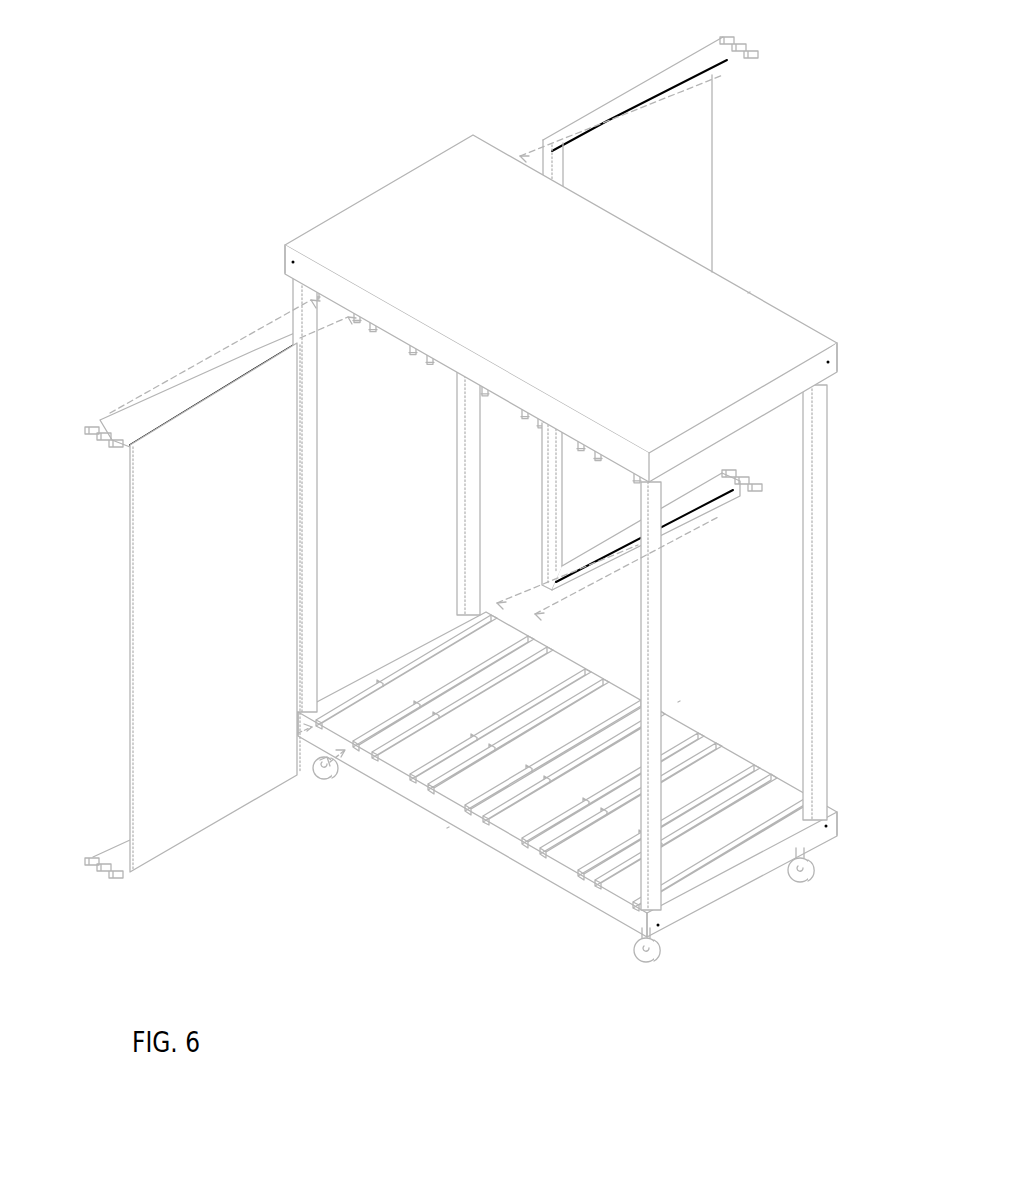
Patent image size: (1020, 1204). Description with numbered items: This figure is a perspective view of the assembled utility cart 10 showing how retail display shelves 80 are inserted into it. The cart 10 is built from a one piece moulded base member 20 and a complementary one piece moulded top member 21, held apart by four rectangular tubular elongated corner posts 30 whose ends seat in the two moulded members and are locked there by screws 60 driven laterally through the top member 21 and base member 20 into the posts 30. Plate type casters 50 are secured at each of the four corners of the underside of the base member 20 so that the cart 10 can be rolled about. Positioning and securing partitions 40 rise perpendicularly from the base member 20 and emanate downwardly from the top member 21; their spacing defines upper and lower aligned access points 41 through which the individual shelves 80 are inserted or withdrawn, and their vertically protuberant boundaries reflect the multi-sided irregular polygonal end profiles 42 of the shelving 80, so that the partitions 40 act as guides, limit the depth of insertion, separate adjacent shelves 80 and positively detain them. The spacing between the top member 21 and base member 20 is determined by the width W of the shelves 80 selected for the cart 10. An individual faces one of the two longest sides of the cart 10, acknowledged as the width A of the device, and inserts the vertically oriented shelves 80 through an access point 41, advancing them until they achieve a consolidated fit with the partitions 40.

The utility cart 10 is at (467, 500).
The base member 20 is at (538, 868).
The top member 21 is at (795, 320).
The corner posts 30 is at (310, 455).
The positioning and securing partitions 40 is at (430, 361).
The access points 41 is at (333, 299).
The shelf end profiles 42 is at (668, 78).
The casters 50 is at (330, 782).
The screws 60 is at (291, 262).
The retail display shelves 80 is at (419, 473).
The width of the display shelves W is at (712, 228).
The width of the device A is at (748, 293).